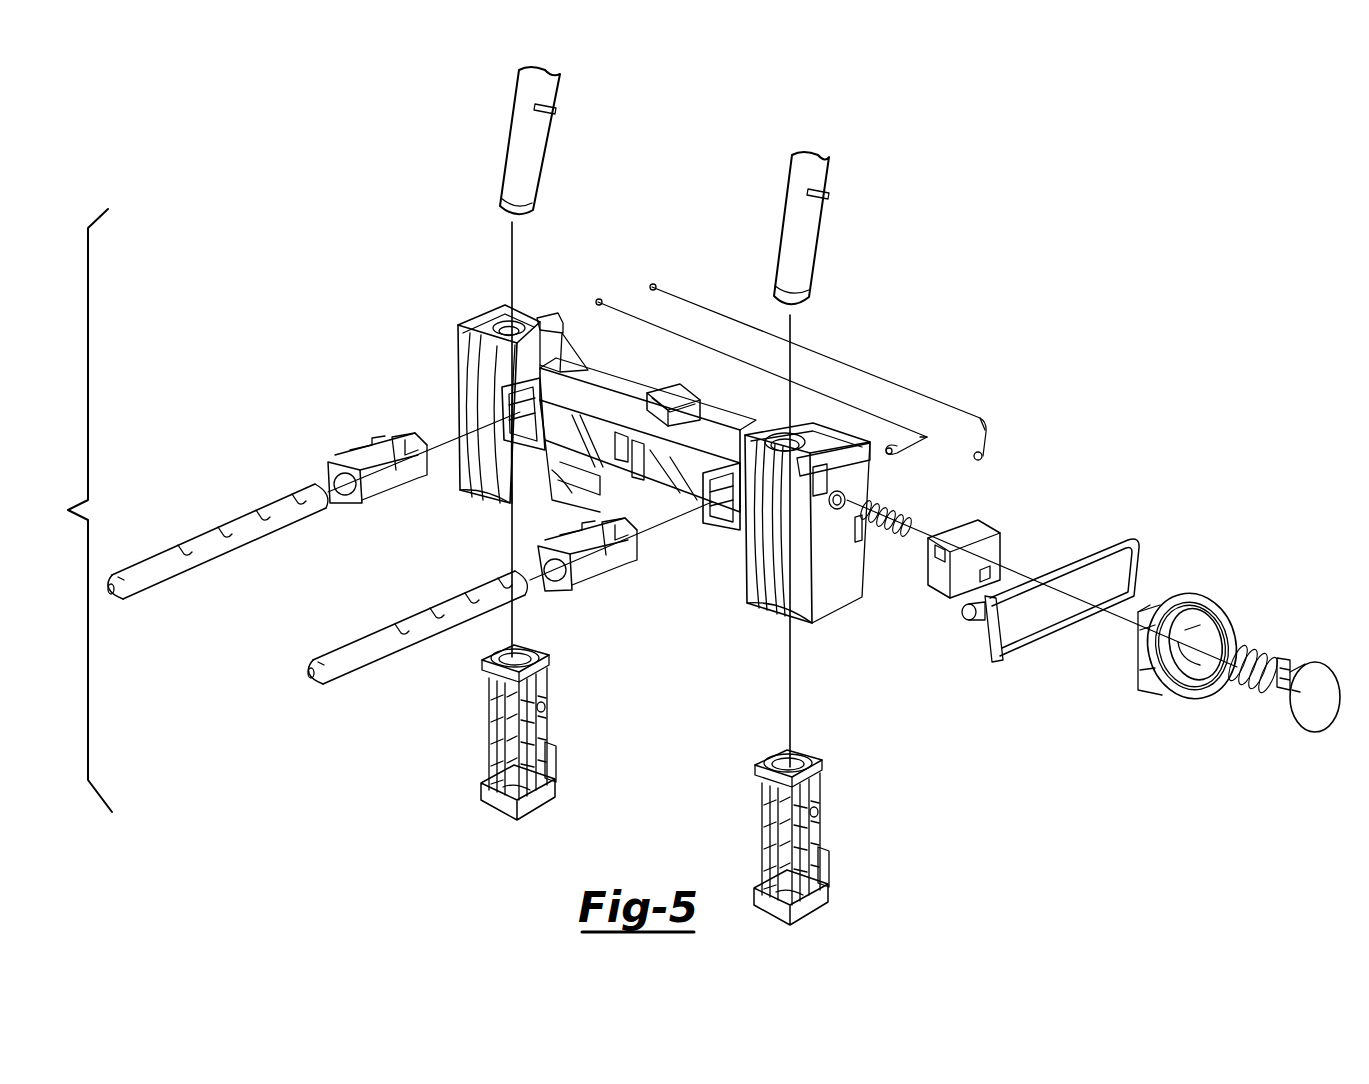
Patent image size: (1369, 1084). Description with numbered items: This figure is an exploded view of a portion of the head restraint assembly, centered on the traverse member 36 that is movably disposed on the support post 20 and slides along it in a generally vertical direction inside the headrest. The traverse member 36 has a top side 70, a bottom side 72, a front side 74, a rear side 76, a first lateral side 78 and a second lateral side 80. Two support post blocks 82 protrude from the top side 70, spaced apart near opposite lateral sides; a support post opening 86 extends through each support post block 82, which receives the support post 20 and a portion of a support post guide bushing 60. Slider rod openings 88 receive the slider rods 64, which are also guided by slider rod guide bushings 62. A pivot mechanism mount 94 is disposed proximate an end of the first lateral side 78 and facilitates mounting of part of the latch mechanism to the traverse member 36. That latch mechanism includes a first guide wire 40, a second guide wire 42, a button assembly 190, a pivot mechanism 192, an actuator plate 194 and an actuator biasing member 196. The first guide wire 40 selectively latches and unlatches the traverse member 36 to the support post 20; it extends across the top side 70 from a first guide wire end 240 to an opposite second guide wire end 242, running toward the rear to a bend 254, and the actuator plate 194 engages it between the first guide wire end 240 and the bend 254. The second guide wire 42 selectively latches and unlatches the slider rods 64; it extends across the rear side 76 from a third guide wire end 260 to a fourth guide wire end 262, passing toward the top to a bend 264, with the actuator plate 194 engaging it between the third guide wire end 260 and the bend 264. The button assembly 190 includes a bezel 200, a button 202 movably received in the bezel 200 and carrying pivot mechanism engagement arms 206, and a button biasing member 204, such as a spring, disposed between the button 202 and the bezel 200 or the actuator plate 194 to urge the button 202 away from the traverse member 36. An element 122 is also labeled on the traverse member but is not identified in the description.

The support post 20 is at (535, 141).
The traverse member 36 is at (482, 392).
The first guide wire 40 is at (688, 343).
The second guide wire 42 is at (717, 312).
The support post guide bushing 60 is at (755, 830).
The slider rod guide bushing 62 is at (393, 490).
The slider rod 64 is at (170, 560).
The top side 70 is at (635, 472).
The bottom side 72 is at (663, 560).
The front side 74 is at (572, 493).
The rear side 76 is at (799, 519).
The first lateral side 78 is at (832, 600).
The second lateral side 80 is at (458, 410).
The support post block 82 is at (500, 316).
The support post opening 86 is at (516, 328).
The slider rod opening 88 is at (525, 495).
The pivot mechanism mount 94 is at (818, 503).
The latch button 122 is at (597, 367).
The button assembly 190 is at (1239, 697).
The pivot mechanism 192 is at (1135, 545).
The actuator plate 194 is at (975, 527).
The actuator biasing member 196 is at (890, 535).
The bezel 200 is at (1200, 597).
The button 202 is at (1301, 712).
The button biasing member 204 is at (1248, 690).
The pivot mechanism engagement arm 206 is at (1276, 658).
The first guide wire end 240 is at (887, 455).
The second guide wire end 242 is at (600, 298).
The bend 254 is at (927, 436).
The third guide wire end 260 is at (983, 461).
The fourth guide wire end 262 is at (651, 285).
The bend 264 is at (986, 422).